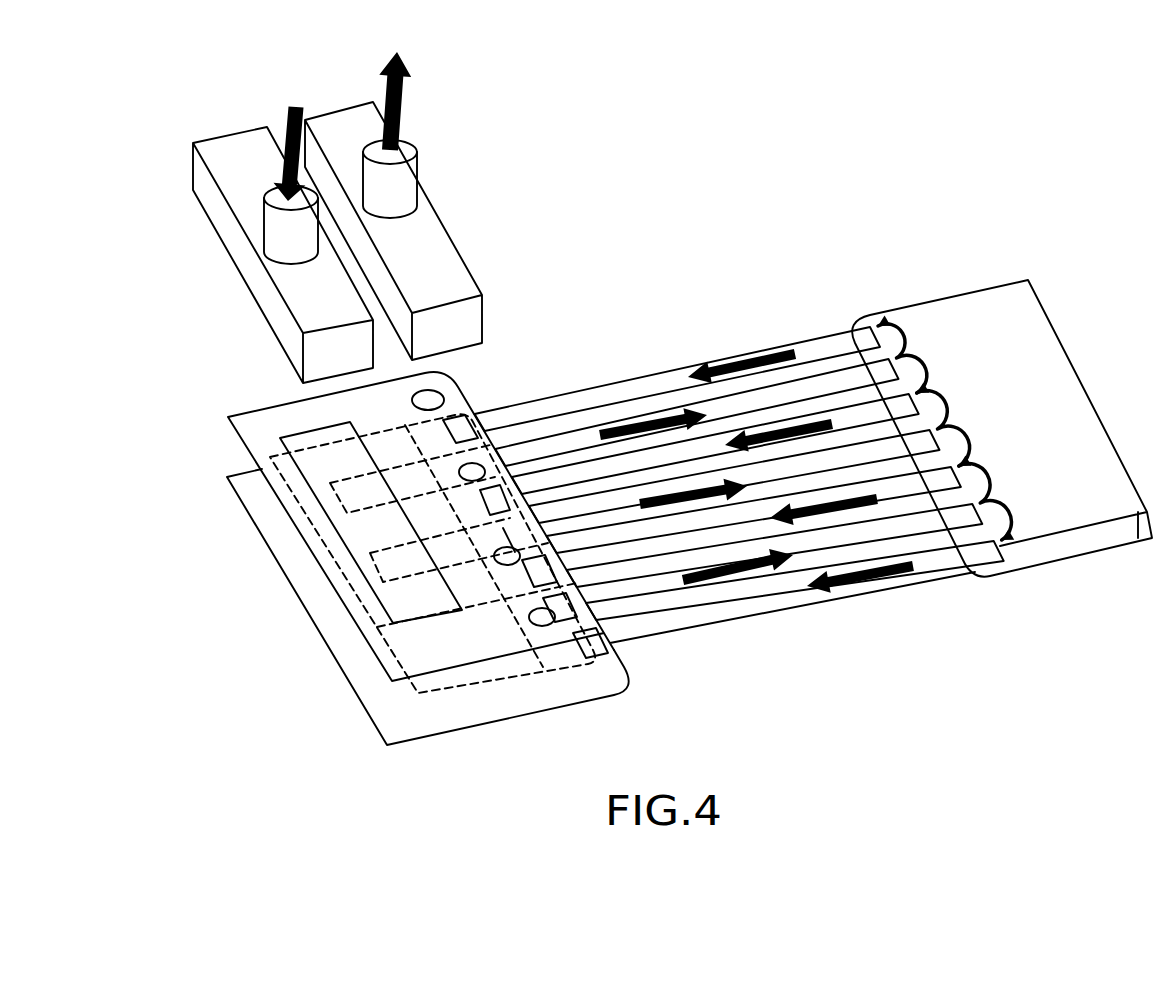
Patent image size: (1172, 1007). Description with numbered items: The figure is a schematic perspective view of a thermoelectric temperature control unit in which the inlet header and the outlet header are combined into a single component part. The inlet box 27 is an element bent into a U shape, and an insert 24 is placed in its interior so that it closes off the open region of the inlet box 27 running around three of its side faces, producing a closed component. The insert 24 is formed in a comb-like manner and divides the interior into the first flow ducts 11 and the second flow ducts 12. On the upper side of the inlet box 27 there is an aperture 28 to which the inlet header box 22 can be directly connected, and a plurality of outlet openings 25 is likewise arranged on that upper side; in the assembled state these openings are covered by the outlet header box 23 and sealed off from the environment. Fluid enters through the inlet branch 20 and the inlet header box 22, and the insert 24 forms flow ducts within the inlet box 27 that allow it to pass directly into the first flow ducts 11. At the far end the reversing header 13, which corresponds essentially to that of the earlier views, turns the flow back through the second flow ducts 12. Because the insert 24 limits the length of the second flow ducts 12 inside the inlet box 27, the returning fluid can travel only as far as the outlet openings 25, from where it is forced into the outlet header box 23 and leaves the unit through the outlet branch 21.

The first flow ducts 11 is at (670, 585).
The second flow ducts 12 is at (775, 602).
The reversing header 13 is at (1010, 312).
The inlet branch 20 is at (277, 233).
The outlet branch 21 is at (403, 180).
The inlet header box 22 is at (280, 323).
The outlet header box 23 is at (442, 267).
The insert 24 is at (437, 695).
The outlet openings 25 is at (446, 398).
The inlet box 27 is at (360, 703).
The aperture 28 is at (332, 527).